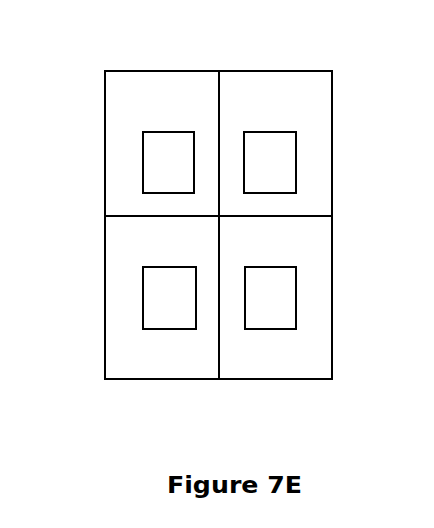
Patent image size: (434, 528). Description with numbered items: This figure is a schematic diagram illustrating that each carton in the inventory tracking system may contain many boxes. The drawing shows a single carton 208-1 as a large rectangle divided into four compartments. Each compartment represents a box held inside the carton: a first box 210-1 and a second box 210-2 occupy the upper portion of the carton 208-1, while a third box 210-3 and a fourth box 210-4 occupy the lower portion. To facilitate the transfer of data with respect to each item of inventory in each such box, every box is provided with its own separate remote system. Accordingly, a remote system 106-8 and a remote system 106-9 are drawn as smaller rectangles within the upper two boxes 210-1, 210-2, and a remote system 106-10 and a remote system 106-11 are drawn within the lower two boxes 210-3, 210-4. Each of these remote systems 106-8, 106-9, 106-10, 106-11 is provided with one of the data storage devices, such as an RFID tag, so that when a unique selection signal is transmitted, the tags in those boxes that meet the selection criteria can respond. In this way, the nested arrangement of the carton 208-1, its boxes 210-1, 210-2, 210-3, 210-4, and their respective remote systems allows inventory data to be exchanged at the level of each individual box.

The carton 208-1 is at (169, 71).
The box 210-1 is at (205, 95).
The box 210-2 is at (307, 155).
The box 210-3 is at (294, 325).
The box 210-4 is at (320, 341).
The remote system 106-8 is at (164, 148).
The remote system 106-9 is at (156, 162).
The remote system 106-10 is at (157, 286).
The remote system 106-11 is at (159, 310).